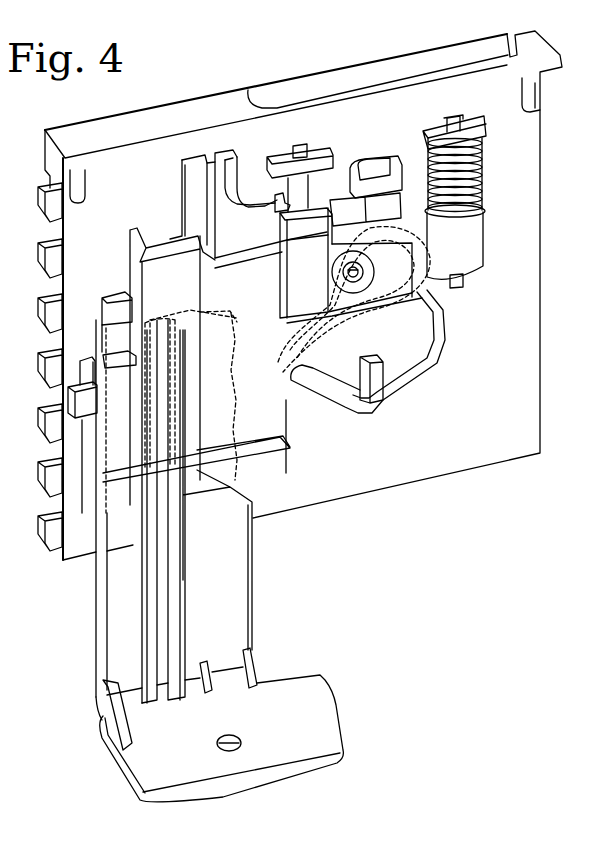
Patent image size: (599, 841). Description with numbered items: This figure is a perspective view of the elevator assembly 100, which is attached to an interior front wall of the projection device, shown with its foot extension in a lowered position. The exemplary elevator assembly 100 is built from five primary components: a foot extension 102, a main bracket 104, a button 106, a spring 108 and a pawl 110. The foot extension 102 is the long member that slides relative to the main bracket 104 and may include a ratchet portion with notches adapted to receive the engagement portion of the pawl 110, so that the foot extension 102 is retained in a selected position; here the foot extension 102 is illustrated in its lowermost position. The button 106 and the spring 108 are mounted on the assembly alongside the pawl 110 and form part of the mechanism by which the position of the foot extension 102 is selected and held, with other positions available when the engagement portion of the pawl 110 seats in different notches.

The elevator assembly 100 is at (557, 202).
The foot extension 102 is at (125, 600).
The main bracket 104 is at (263, 413).
The button 106 is at (474, 125).
The spring 108 is at (487, 173).
The pawl 110 is at (433, 293).